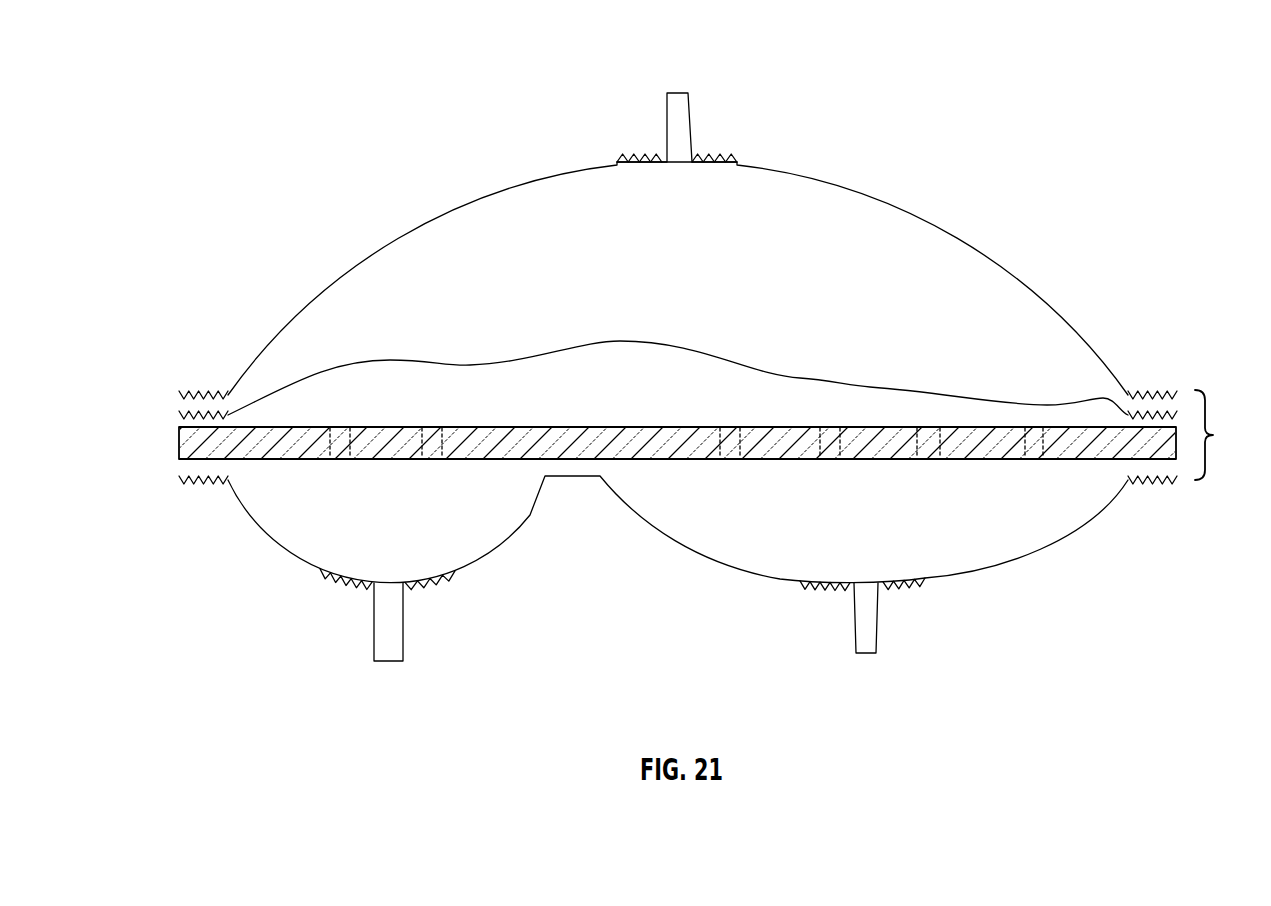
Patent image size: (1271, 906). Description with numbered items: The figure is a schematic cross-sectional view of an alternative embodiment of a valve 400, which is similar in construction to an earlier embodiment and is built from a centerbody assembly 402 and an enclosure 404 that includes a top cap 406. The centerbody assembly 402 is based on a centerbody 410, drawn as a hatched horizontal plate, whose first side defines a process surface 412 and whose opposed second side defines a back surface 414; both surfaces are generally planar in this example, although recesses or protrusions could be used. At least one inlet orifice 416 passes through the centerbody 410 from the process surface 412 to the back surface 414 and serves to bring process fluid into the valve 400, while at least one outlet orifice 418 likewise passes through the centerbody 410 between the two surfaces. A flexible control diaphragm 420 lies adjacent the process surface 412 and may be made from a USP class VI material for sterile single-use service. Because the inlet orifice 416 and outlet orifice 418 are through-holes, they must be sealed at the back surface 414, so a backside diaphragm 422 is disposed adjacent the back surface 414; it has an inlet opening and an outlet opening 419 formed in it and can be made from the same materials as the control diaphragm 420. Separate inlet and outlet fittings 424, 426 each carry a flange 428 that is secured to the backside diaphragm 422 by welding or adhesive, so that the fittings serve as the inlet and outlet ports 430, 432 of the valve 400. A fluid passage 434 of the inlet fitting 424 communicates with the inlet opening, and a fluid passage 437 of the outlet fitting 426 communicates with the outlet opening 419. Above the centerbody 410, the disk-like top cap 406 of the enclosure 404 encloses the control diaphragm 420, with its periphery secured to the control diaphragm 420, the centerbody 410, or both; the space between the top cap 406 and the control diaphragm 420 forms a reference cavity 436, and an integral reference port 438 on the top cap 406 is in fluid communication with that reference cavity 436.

The valve 400 is at (792, 83).
The centerbody assembly 402 is at (718, 412).
The enclosure 404 is at (1128, 327).
The top cap 406 is at (1028, 290).
The centerbody 410 is at (195, 441).
The process surface 412 is at (301, 422).
The back surface 414 is at (294, 461).
The inlet orifice 416 is at (430, 428).
The outlet orifice 418 is at (720, 428).
The outlet opening 419 is at (915, 578).
The control diaphragm 420 is at (841, 380).
The backside diaphragm 422 is at (522, 520).
The inlet fitting 424 is at (406, 650).
The outlet fitting 426 is at (853, 637).
The flange 428 is at (412, 590).
The inlet port 430 is at (390, 678).
The outlet port 432 is at (868, 683).
The fluid passage 434 is at (388, 627).
The reference cavity 436 is at (827, 203).
The fluid passage 437 is at (876, 622).
The reference port 438 is at (690, 110).